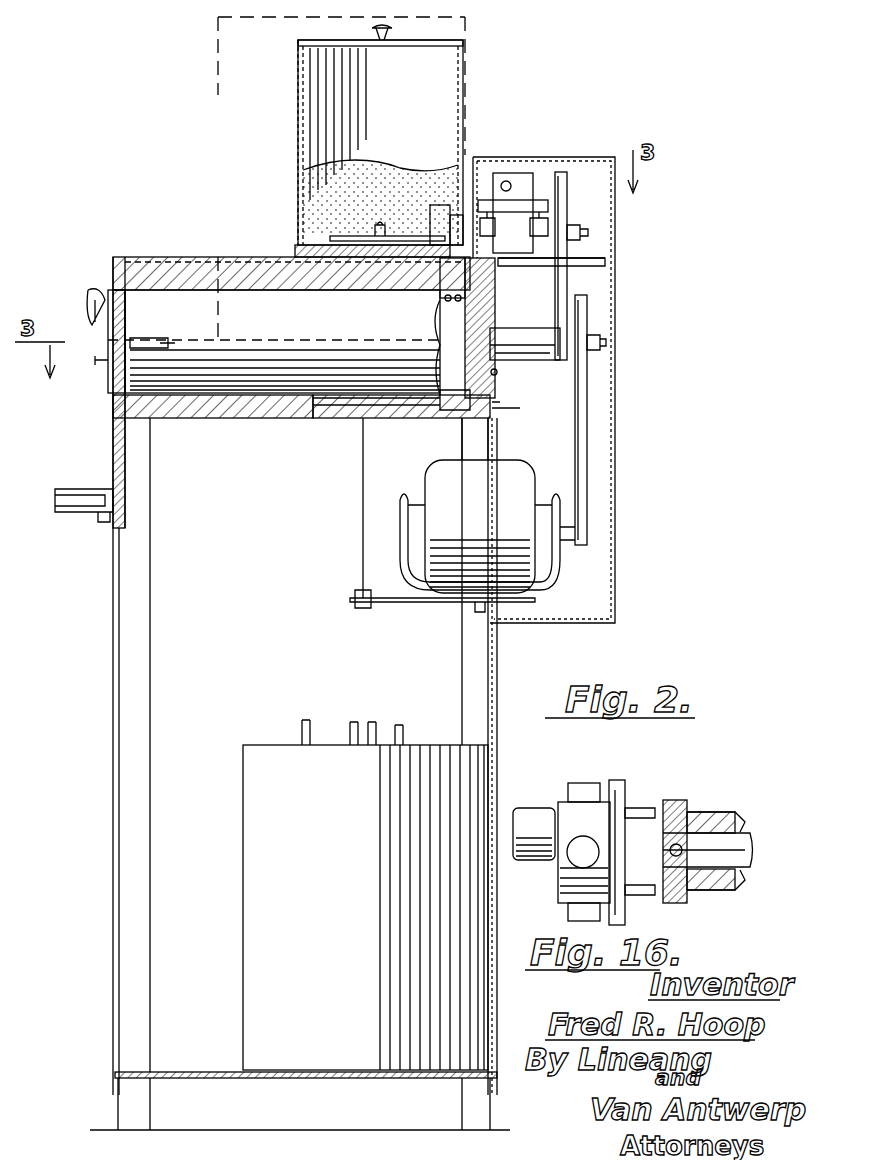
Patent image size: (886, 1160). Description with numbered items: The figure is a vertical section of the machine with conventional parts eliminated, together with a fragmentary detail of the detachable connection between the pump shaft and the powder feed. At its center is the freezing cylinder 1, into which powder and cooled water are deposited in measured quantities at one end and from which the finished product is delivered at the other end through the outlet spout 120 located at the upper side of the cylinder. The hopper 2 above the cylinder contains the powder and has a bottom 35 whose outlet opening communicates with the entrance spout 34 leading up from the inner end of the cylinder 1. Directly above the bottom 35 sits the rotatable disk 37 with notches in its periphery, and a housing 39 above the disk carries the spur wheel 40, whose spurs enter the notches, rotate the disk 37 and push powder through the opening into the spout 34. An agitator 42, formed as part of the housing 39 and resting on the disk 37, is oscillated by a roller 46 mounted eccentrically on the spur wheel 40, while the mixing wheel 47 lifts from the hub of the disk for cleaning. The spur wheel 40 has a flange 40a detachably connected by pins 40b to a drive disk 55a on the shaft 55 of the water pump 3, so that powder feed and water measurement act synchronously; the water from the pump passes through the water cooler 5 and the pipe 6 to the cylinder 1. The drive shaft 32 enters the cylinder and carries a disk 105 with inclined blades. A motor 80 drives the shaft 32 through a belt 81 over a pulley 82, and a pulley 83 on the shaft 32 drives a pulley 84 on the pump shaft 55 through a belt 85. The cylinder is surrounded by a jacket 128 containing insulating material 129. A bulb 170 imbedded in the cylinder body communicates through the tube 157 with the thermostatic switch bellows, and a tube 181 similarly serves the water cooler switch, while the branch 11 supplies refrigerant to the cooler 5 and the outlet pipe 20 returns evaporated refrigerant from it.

In FIG. 2, the freezing cylinder 1 is at (267, 341).
In FIG. 2, the hopper 2 is at (380, 135).
In FIG. 2, the water pump 3 is at (508, 180).
In FIG. 2, the water cooler 5 is at (365, 907).
In FIG. 2, the pipe 6 is at (352, 730).
In FIG. 2, the branch 11 is at (302, 728).
In FIG. 2, the outlet pipe 20 is at (401, 735).
In FIG. 2, the drive shaft 32 is at (606, 343).
In FIG. 2, the entrance spout 34 is at (470, 285).
In FIG. 2, the bottom 35 is at (372, 265).
In FIG. 2, the rotatable disk 37 is at (300, 250).
In FIG. 2, the housing 39 is at (450, 215).
In FIG. 16, the spur wheel 40 is at (575, 827).
In FIG. 16, the flange 40a is at (615, 790).
In FIG. 16, the pins 40b is at (645, 808).
In FIG. 2, the agitator 42 is at (335, 238).
In FIG. 16, the roller 46 is at (538, 830).
In FIG. 2, the mixing wheel 47 is at (345, 235).
In FIG. 2, the shaft 55 is at (580, 232).
In FIG. 16, the shaft 55 is at (735, 845).
In FIG. 16, the drive disk 55a is at (675, 800).
In FIG. 2, the motor 80 is at (462, 515).
In FIG. 2, the belt 81 is at (585, 433).
In FIG. 2, the pulley 82 is at (587, 304).
In FIG. 2, the pulley 83 is at (556, 334).
In FIG. 2, the pulley 84 is at (567, 205).
In FIG. 2, the belt 85 is at (560, 251).
In FIG. 2, the disk 105 is at (492, 370).
In FIG. 2, the outlet spout 120 is at (103, 300).
In FIG. 2, the jacket 128 is at (308, 412).
In FIG. 2, the insulating material 129 is at (248, 412).
In FIG. 2, the tube 157 is at (510, 408).
In FIG. 2, the bulb 170 is at (445, 405).
In FIG. 2, the tube 181 is at (372, 730).